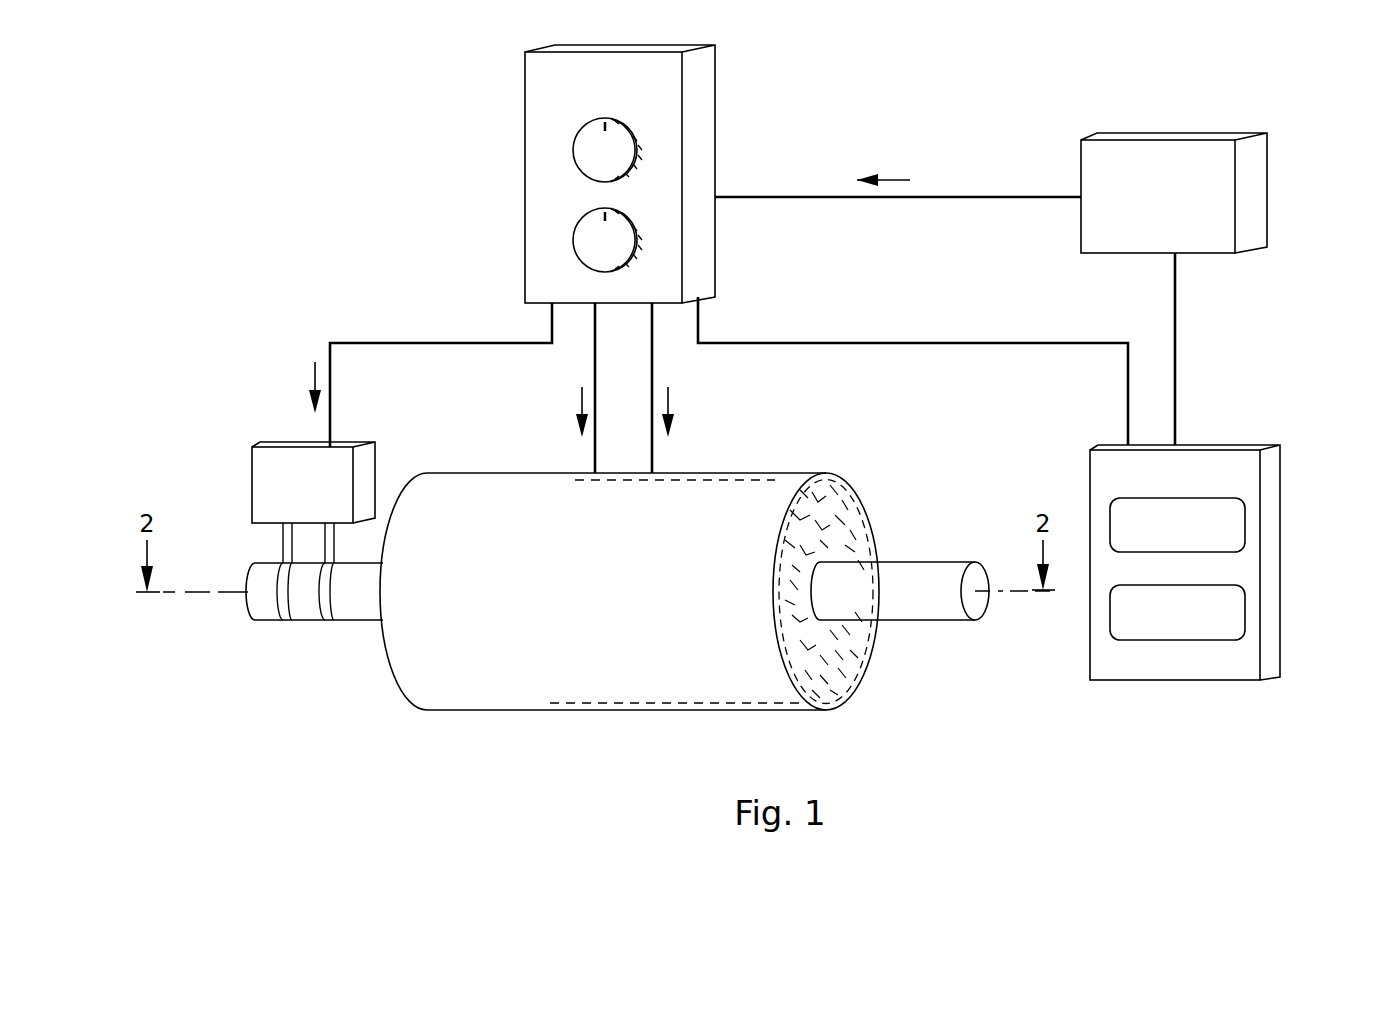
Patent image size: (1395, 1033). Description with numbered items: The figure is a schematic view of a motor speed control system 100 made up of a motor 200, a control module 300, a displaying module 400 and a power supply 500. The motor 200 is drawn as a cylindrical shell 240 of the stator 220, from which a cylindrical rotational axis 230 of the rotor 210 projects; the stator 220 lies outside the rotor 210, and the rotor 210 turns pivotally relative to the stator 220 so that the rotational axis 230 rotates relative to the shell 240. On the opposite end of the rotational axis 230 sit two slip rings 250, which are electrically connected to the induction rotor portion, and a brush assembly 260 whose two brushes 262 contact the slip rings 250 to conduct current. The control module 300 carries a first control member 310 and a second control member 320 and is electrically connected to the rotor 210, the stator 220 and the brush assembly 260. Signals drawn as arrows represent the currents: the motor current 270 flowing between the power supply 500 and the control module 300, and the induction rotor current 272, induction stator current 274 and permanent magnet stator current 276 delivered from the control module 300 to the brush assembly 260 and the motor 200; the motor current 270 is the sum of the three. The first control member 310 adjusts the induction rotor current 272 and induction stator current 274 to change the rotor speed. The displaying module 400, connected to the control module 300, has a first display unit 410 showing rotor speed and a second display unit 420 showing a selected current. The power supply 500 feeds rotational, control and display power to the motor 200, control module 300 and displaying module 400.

The motor speed control system 100 is at (272, 63).
The motor 200 is at (634, 648).
The rotor 210 is at (875, 665).
The stator 220 is at (860, 695).
The rotational axis 230 is at (927, 572).
The shell 240 is at (525, 697).
The slip rings 250 is at (284, 619).
The brush assembly 260 is at (256, 488).
The brushes 262 is at (284, 548).
The motor current 270 is at (893, 180).
The induction rotor current 272 is at (315, 379).
The induction stator current 274 is at (582, 405).
The permanent magnet stator current 276 is at (668, 405).
The control module 300 is at (627, 174).
The first control member 310 is at (578, 156).
The second control member 320 is at (578, 244).
The displaying module 400 is at (1231, 466).
The first display unit 410 is at (1245, 525).
The second display unit 420 is at (1245, 612).
The power supply 500 is at (1255, 185).